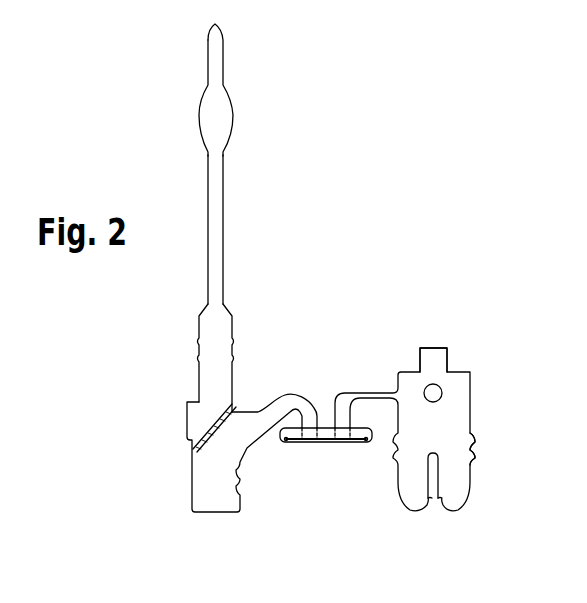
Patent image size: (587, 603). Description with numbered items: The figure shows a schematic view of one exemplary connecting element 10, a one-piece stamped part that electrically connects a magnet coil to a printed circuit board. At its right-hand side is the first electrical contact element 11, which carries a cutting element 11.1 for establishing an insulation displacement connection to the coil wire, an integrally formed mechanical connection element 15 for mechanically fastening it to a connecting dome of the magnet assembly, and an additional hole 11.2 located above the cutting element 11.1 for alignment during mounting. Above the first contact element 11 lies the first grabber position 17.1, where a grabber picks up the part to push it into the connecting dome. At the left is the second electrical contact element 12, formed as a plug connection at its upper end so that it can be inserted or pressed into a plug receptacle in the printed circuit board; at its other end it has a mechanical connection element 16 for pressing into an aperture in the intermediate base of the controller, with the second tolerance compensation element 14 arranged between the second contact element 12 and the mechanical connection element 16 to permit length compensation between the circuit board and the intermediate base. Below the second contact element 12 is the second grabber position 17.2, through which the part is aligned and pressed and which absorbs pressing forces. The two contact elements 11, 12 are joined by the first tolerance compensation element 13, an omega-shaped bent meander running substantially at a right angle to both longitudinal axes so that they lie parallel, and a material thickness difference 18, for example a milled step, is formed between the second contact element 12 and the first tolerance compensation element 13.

The connecting element 10 is at (448, 98).
The first electrical contact element 11 is at (458, 422).
The cutting element 11.1 is at (452, 482).
The hole 11.2 is at (433, 393).
The second electrical contact element 12 is at (218, 121).
The first tolerance compensation element 13 is at (323, 442).
The second tolerance compensation element 14 is at (219, 223).
The mechanical connection element 15 is at (465, 443).
The mechanical connection element 16 is at (223, 333).
The first grabber position 17.1 is at (442, 350).
The second grabber position 17.2 is at (213, 500).
The material thickness difference 18 is at (202, 428).